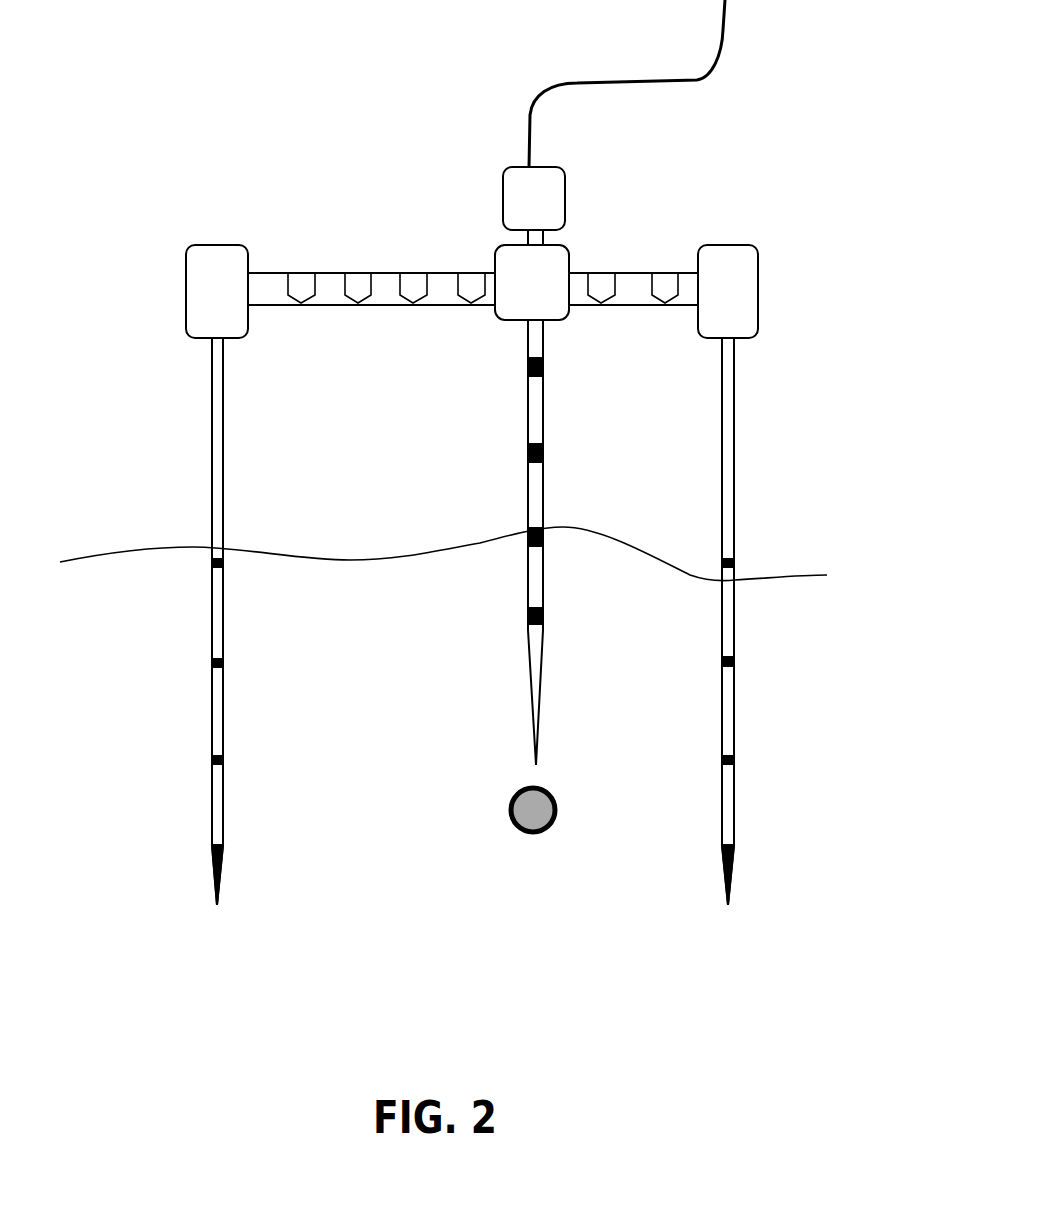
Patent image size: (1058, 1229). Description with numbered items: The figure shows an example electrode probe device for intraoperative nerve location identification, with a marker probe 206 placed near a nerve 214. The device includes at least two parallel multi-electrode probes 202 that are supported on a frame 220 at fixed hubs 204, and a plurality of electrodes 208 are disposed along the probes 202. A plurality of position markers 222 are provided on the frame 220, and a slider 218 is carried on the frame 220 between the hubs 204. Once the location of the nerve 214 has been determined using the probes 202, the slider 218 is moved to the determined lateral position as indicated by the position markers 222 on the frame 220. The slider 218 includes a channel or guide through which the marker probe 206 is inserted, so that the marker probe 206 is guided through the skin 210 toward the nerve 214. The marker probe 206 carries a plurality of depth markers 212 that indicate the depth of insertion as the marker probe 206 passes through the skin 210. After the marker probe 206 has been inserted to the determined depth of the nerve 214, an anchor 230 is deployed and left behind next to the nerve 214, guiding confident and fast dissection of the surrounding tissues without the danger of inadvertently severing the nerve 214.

The multi-electrode probe 202 is at (198, 435).
The fixed hub 204 is at (212, 222).
The marker probe 206 is at (553, 162).
The electrode 208 is at (738, 655).
The skin 210 is at (800, 565).
The depth marker 212 is at (541, 448).
The nerve 214 is at (553, 778).
The slider 218 is at (553, 247).
The frame 220 is at (343, 248).
The position marker 222 is at (472, 272).
The anchor 230 is at (565, 90).